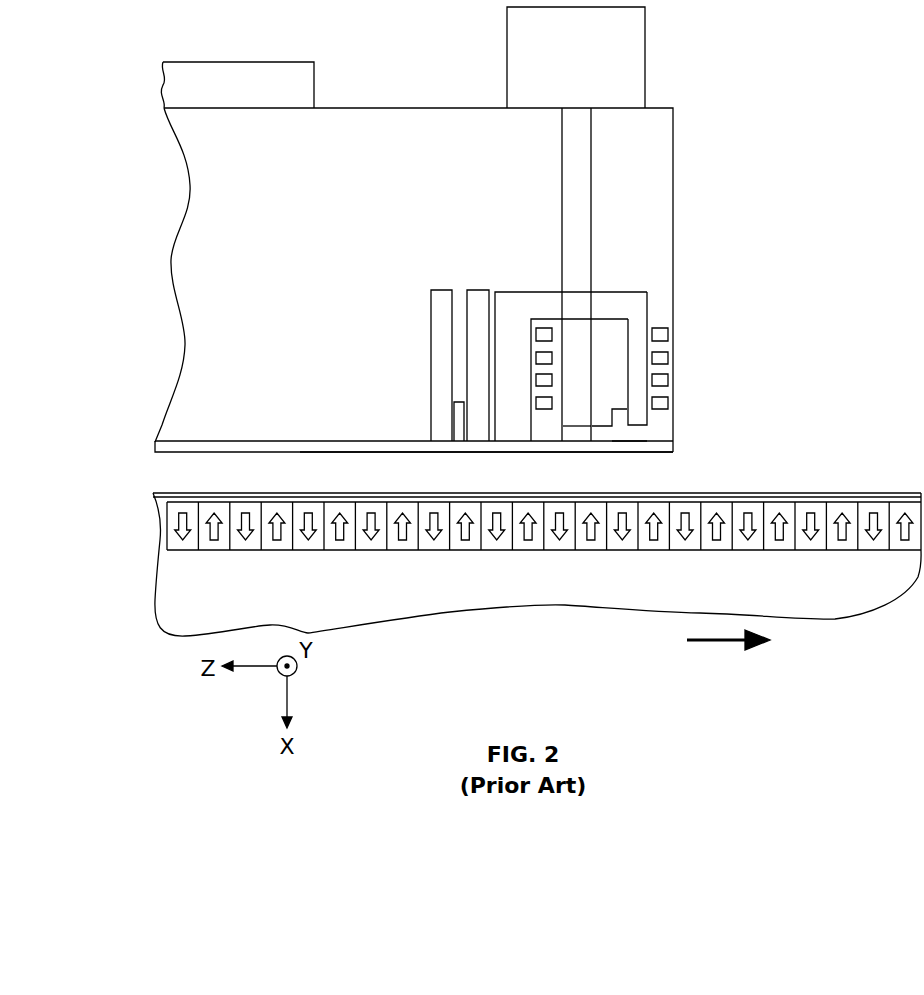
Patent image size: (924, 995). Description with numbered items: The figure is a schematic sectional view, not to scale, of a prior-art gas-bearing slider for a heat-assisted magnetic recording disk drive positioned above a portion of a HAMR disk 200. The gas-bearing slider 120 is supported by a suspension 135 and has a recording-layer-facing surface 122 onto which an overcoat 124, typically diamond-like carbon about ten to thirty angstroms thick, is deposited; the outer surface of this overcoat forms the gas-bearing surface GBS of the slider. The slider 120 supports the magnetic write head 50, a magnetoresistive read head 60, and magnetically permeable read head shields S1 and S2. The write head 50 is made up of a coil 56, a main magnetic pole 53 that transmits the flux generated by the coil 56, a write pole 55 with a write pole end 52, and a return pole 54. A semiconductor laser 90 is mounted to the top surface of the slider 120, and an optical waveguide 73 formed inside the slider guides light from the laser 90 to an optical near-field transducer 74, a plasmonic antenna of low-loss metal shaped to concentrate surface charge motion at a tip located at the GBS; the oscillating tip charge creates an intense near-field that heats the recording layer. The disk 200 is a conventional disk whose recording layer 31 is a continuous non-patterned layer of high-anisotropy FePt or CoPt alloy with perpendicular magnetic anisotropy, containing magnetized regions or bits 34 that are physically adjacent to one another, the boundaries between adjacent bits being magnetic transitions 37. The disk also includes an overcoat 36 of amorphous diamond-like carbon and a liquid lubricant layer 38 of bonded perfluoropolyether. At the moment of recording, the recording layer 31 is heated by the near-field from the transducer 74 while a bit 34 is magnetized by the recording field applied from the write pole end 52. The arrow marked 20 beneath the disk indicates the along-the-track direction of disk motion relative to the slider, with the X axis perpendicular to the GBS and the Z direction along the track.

The gas-bearing slider 120 is at (196, 346).
The suspension 135 is at (304, 68).
The semiconductor laser 90 is at (640, 58).
The optical waveguide 73 is at (574, 242).
The recording-layer-facing surface 122 is at (258, 440).
The overcoat 124 is at (290, 452).
The gas-bearing surface GBS is at (652, 452).
The magnetic write head 50 is at (512, 238).
The read head shield S1 is at (440, 365).
The read head shield S2 is at (479, 290).
The magnetoresistive read head 60 is at (452, 432).
The return pole 54 is at (513, 300).
The main magnetic pole 53 is at (640, 315).
The coil 56 is at (532, 320).
The optical near-field transducer 74 is at (575, 425).
The write pole end 52 is at (602, 425).
The write pole 55 is at (620, 437).
The disk 200 is at (810, 606).
The recording layer 31 is at (138, 505).
The liquid lubricant layer 38 is at (760, 493).
The overcoat 36 is at (820, 500).
The bits 34 is at (876, 512).
The magnetic transitions 37 is at (824, 552).
The medium motion direction 20 is at (718, 642).